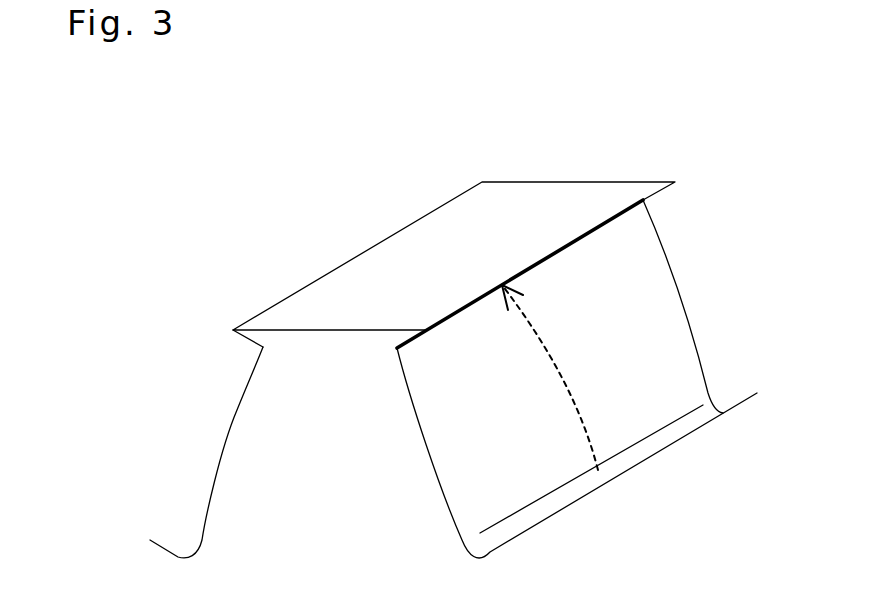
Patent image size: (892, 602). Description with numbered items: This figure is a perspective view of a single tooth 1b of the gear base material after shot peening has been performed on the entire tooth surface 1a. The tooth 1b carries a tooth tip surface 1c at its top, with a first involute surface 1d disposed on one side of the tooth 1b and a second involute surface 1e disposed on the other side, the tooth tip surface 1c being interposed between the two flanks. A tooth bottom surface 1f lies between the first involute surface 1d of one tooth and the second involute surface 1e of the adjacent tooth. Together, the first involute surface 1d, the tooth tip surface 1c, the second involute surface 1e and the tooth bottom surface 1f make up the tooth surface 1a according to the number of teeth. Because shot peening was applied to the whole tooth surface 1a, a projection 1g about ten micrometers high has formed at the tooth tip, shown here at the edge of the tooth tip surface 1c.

The tooth surface 1a is at (499, 334).
The tooth 1b is at (341, 511).
The tooth tip surface 1c is at (547, 190).
The first involute surface 1d is at (222, 442).
The second involute surface 1e is at (677, 289).
The tooth bottom surface 1f is at (472, 550).
The projection 1g is at (252, 340).